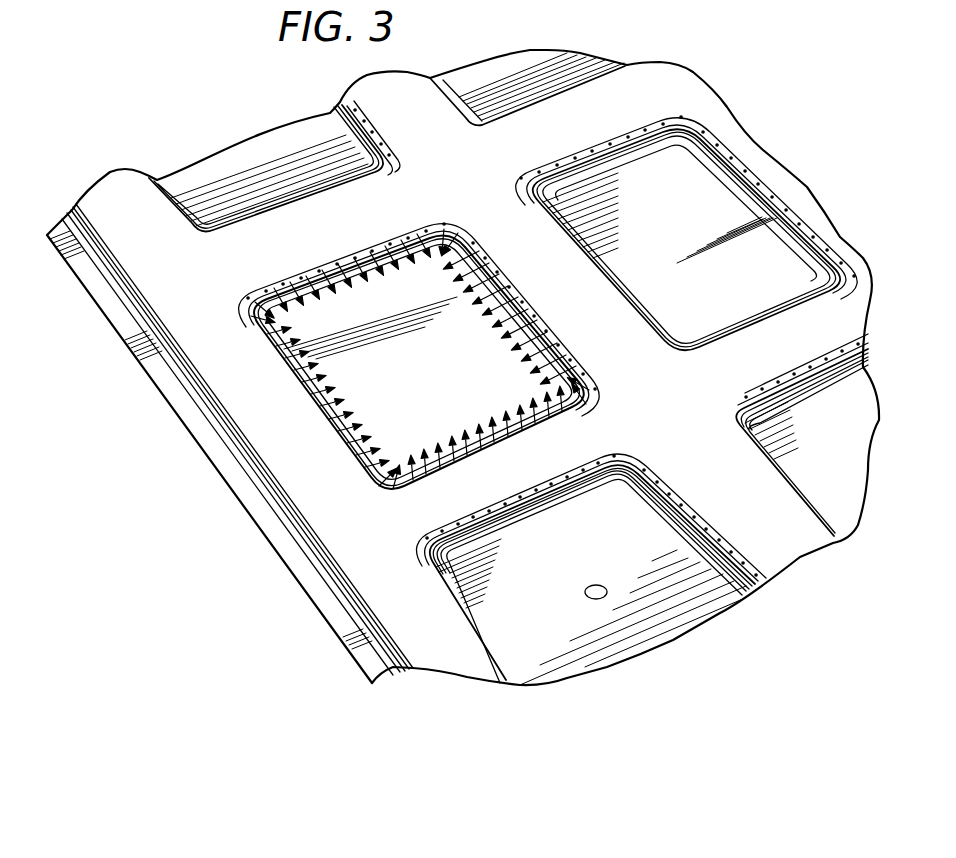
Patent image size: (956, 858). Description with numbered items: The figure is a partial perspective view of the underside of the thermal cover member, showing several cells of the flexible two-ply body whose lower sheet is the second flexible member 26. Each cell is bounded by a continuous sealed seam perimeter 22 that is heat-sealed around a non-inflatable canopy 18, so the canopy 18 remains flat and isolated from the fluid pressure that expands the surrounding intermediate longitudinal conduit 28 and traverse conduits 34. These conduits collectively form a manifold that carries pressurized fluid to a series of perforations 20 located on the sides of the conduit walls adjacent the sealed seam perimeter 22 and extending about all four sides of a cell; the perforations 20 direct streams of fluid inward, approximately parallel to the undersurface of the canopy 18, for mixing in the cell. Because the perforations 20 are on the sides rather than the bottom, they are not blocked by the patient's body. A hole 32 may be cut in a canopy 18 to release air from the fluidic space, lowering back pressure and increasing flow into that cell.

The canopy 18 is at (700, 190).
The perforations 20 is at (441, 234).
The continuous sealed seam perimeter 22 is at (250, 312).
The second flexible member 26 is at (332, 518).
The intermediate longitudinal conduit 28 is at (414, 110).
The hole 32 is at (594, 584).
The traverse conduit 34 is at (780, 323).